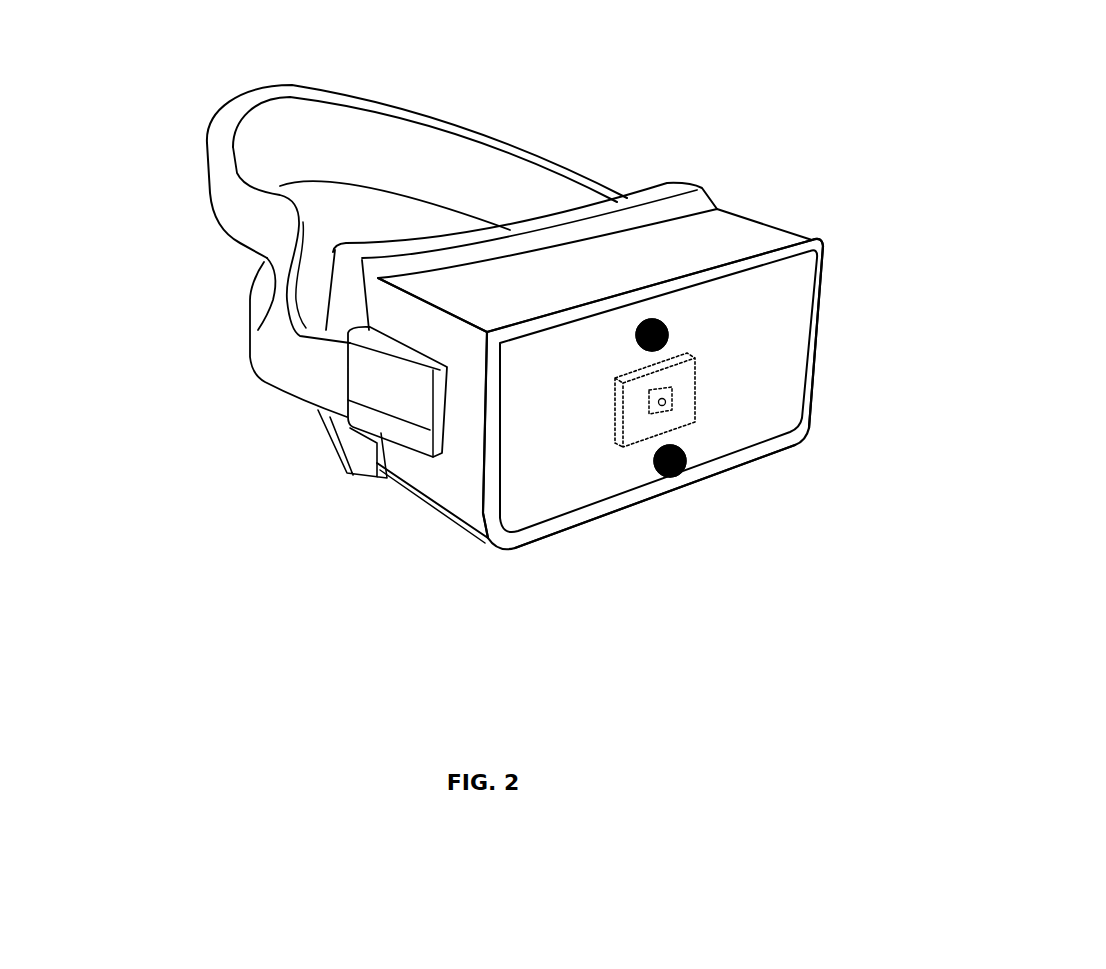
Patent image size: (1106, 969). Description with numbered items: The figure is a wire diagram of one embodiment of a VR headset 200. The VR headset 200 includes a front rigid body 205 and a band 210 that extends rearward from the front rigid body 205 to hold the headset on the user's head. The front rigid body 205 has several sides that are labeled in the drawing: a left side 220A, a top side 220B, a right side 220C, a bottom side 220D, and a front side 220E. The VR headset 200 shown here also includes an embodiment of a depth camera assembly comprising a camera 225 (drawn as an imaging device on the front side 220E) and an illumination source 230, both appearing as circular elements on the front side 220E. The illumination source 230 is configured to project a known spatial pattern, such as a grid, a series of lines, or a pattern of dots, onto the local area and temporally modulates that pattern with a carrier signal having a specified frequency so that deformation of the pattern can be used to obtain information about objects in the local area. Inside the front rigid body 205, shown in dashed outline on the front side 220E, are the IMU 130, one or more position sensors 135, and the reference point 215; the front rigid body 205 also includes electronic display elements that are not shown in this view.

The VR headset 200 is at (147, 82).
The band 210 is at (521, 150).
The front rigid body 205 is at (604, 379).
The left side 220A is at (794, 218).
The top side 220B is at (446, 282).
The right side 220C is at (451, 485).
The bottom side 220D is at (407, 526).
The front side 220E is at (530, 522).
The illumination source 230 is at (679, 322).
The IMU 130 is at (708, 412).
The reference point 215 is at (676, 412).
The position sensors 135 is at (651, 427).
The camera 225 is at (690, 476).